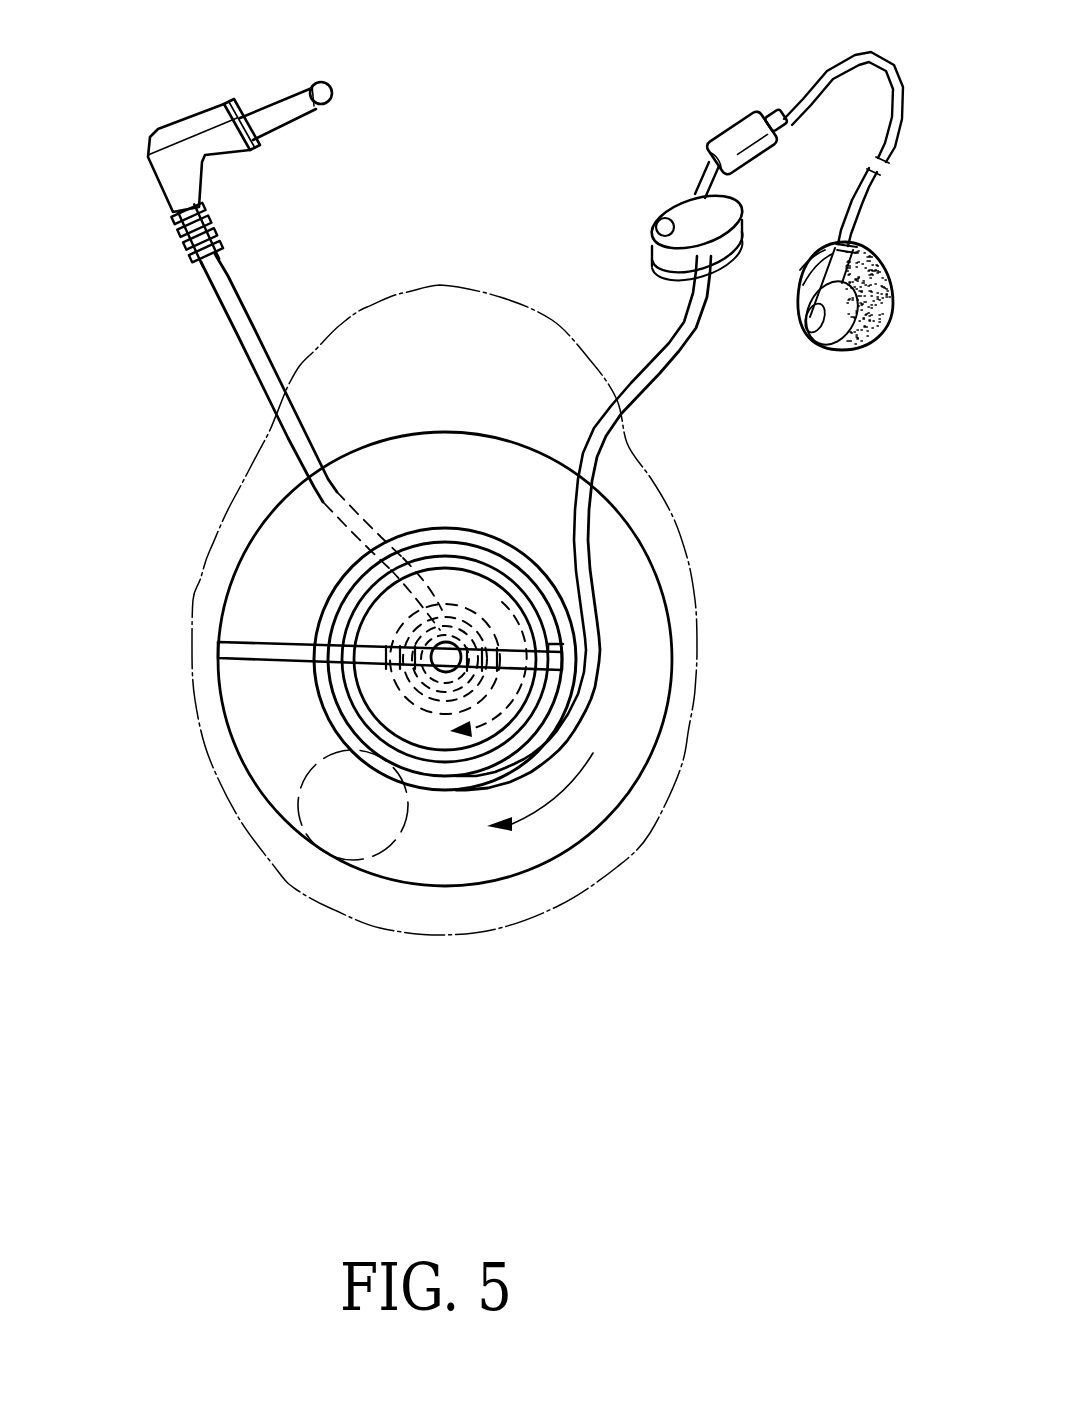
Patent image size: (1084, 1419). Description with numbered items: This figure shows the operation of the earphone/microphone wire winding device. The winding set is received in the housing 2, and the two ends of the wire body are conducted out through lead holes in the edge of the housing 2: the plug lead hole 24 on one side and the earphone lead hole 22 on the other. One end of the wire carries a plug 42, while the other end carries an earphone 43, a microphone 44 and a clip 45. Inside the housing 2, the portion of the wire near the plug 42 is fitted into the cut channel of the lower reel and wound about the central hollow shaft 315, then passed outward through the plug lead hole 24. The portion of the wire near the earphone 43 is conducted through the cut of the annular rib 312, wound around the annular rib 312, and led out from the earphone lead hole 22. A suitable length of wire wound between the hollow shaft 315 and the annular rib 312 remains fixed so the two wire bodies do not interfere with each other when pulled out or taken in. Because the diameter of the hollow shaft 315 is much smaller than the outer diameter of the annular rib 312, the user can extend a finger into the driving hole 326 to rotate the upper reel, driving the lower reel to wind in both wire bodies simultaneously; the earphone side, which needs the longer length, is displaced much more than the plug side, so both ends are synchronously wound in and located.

The housing 2 is at (682, 772).
The earphone lead hole 22 is at (592, 490).
The plug lead hole 24 is at (310, 478).
The plug 42 is at (175, 158).
The earphone 43 is at (848, 350).
The microphone 44 is at (737, 127).
The clip 45 is at (695, 222).
The annular rib 312 is at (465, 755).
The hollow shaft 315 is at (417, 687).
The driving hole 326 is at (347, 833).